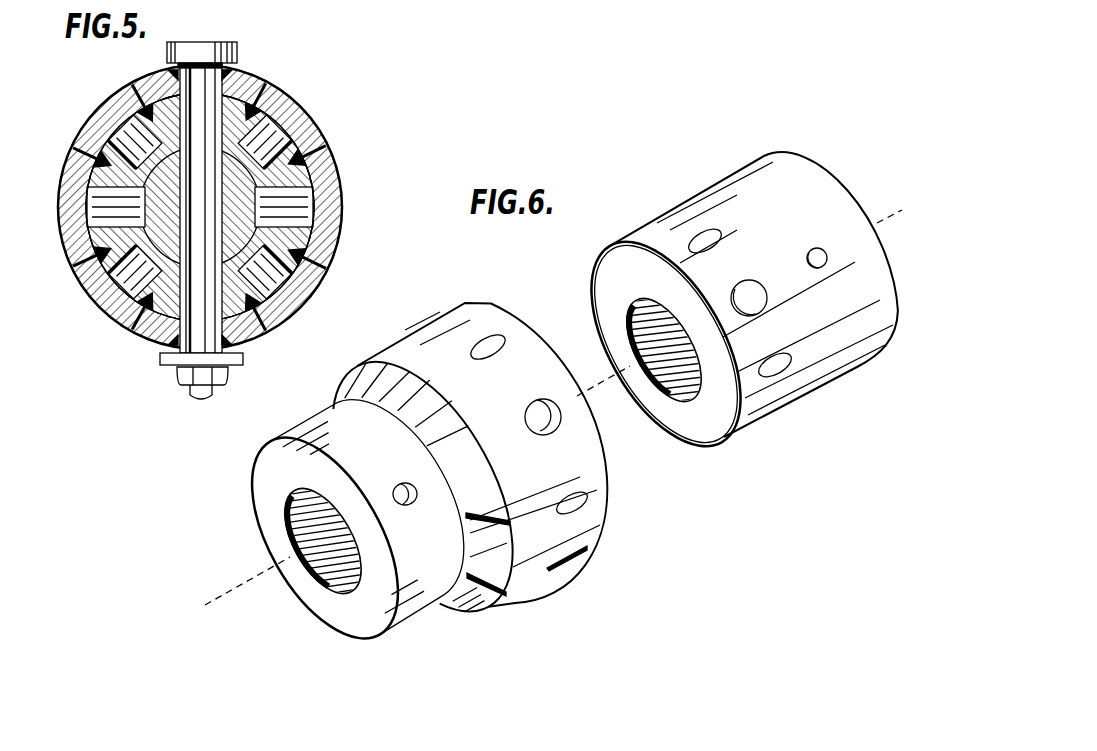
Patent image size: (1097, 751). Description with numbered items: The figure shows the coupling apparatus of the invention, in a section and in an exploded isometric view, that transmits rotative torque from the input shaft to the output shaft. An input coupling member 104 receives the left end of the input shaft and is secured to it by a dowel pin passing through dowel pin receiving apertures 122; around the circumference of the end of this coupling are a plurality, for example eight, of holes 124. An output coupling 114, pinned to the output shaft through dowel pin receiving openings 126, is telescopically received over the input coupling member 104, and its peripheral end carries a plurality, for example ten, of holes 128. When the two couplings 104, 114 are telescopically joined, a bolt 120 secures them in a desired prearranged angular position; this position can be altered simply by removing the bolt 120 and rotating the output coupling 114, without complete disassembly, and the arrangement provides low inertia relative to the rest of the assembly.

In FIG. 6, the input coupling member 104 is at (729, 311).
In FIG. 6, the output coupling 114 is at (414, 482).
In FIG. 5, the bolt 120 is at (211, 97).
In FIG. 5, the dowel pin receiving apertures 122 is at (177, 77).
In FIG. 6, the dowel pin receiving apertures 122 is at (824, 265).
In FIG. 5, the holes 124 is at (290, 106).
In FIG. 6, the holes 124 is at (757, 307).
In FIG. 6, the dowel pin receiving openings 126 is at (413, 494).
In FIG. 6, the holes 128 is at (558, 414).